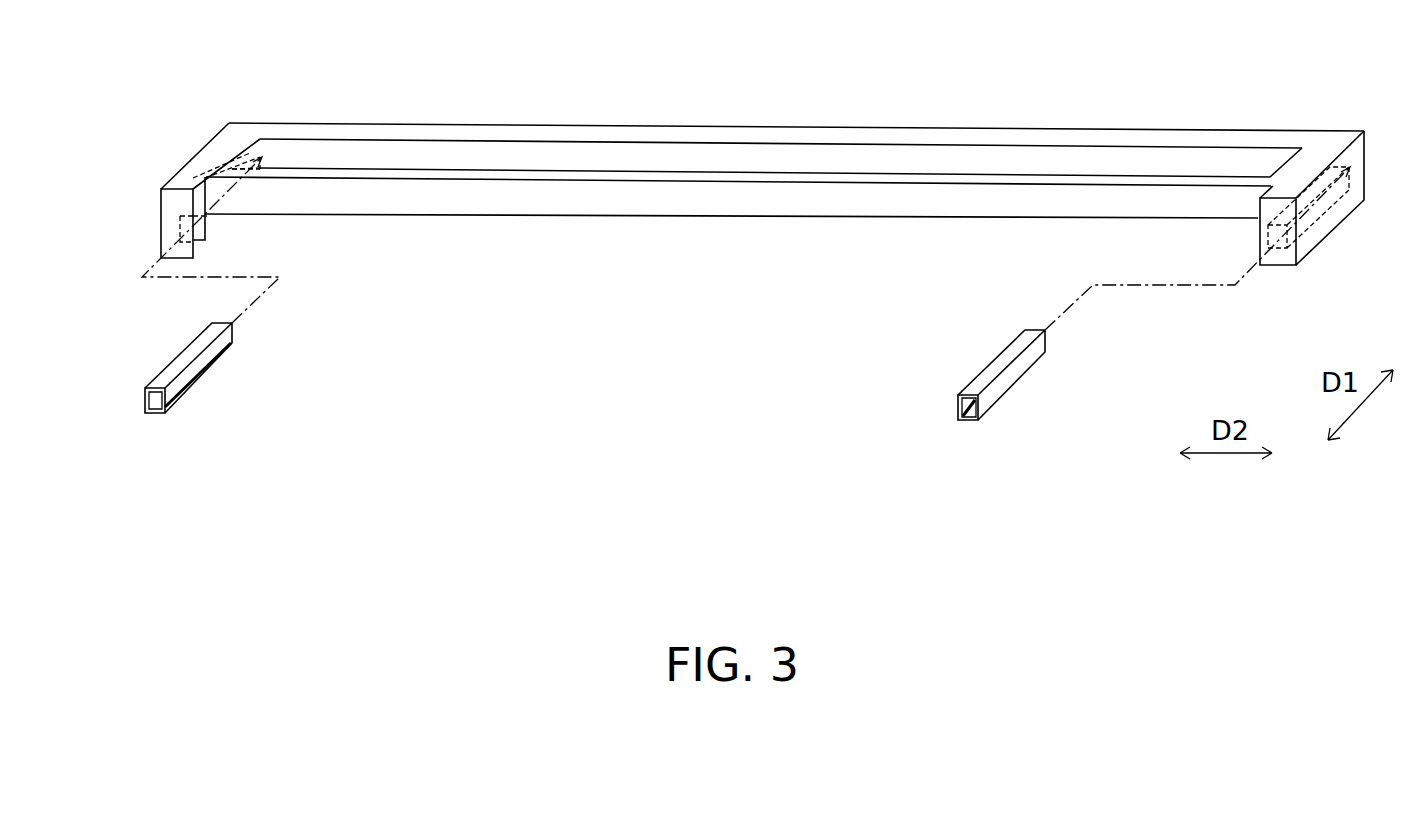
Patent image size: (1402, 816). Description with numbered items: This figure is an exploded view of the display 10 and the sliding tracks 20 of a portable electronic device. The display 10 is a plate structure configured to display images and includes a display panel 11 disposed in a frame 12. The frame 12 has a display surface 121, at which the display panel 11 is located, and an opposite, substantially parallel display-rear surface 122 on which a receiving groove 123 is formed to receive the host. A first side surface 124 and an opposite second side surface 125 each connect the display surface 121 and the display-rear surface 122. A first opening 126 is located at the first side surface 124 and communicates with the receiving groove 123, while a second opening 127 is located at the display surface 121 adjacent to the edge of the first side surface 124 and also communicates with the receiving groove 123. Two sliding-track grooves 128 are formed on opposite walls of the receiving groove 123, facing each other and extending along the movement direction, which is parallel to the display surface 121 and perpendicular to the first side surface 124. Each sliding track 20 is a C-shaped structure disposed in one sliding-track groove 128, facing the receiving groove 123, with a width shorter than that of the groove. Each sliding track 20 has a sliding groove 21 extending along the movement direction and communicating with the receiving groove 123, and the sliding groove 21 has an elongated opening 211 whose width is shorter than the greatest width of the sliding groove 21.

The display 10 is at (1022, 56).
The display panel 11 is at (1017, 163).
The frame 12 is at (1113, 128).
The sliding track 20 is at (163, 365).
The sliding groove 21 is at (155, 397).
The display surface 121 is at (1320, 152).
The display-rear surface 122 is at (1313, 252).
The receiving groove 123 is at (651, 228).
The first side surface 124 is at (1277, 253).
The second side surface 125 is at (782, 125).
The first opening 126 is at (181, 221).
The second opening 127 is at (200, 180).
The sliding-track groove 128 is at (203, 225).
The elongated opening 211 is at (203, 368).